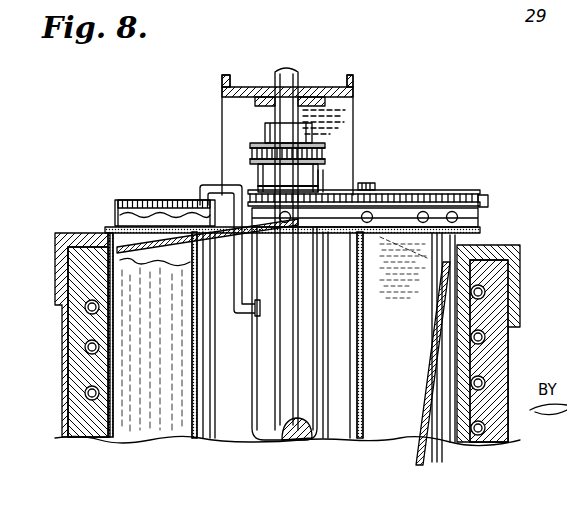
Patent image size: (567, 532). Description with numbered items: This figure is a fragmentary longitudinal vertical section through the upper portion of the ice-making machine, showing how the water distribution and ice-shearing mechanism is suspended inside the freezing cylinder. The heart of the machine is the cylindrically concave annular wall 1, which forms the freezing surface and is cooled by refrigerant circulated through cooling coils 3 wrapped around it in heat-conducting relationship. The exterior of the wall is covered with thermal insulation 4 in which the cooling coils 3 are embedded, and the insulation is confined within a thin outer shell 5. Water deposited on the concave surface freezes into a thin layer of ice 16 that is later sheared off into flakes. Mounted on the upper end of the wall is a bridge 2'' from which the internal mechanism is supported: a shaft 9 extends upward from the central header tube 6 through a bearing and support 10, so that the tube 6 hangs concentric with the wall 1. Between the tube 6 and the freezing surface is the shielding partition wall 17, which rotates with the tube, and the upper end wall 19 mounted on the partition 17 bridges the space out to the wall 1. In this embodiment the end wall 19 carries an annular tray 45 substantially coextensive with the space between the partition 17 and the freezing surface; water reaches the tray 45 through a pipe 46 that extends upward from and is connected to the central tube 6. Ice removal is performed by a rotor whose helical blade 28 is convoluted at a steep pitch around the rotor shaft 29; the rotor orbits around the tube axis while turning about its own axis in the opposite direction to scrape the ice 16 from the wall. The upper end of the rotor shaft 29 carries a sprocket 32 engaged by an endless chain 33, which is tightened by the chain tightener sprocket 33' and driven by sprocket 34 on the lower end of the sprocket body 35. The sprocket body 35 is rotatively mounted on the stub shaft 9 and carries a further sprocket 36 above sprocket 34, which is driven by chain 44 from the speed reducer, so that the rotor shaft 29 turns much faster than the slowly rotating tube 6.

The cylindrically concave annular wall 1 is at (460, 442).
The bridge 2'' is at (306, 122).
The cooling coils 3 is at (468, 312).
The thermal insulation 4 is at (70, 320).
The outer shell 5 is at (66, 355).
The central header tube 6 is at (290, 325).
The shaft 9 is at (283, 82).
The bearing and support 10 is at (260, 102).
The layer of ice 16 is at (110, 290).
The shielding partition wall 17 is at (196, 332).
The upper end wall 19 is at (168, 262).
The helical blade 28 is at (424, 418).
The rotor shaft 29 is at (432, 313).
The sprocket 32 is at (470, 182).
The endless chain 33 is at (319, 211).
The chain tightener sprocket 33' is at (391, 175).
The sprocket 34 is at (300, 190).
The sprocket body 35 is at (267, 130).
The sprocket 36 is at (255, 158).
The chain 44 is at (330, 152).
The annular tray 45 is at (115, 207).
The pipe 46 is at (244, 280).